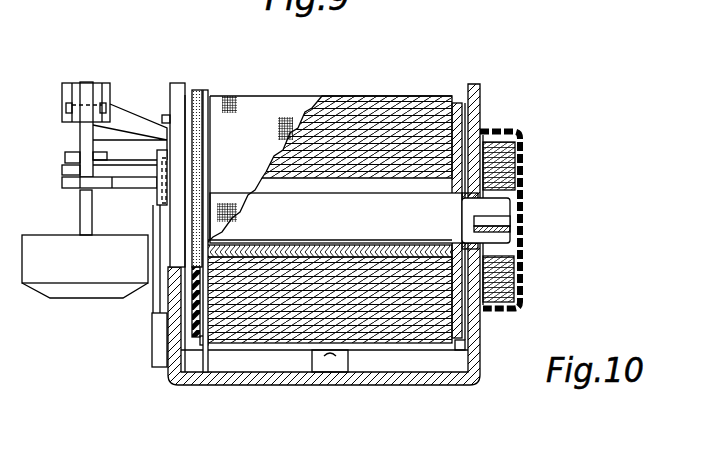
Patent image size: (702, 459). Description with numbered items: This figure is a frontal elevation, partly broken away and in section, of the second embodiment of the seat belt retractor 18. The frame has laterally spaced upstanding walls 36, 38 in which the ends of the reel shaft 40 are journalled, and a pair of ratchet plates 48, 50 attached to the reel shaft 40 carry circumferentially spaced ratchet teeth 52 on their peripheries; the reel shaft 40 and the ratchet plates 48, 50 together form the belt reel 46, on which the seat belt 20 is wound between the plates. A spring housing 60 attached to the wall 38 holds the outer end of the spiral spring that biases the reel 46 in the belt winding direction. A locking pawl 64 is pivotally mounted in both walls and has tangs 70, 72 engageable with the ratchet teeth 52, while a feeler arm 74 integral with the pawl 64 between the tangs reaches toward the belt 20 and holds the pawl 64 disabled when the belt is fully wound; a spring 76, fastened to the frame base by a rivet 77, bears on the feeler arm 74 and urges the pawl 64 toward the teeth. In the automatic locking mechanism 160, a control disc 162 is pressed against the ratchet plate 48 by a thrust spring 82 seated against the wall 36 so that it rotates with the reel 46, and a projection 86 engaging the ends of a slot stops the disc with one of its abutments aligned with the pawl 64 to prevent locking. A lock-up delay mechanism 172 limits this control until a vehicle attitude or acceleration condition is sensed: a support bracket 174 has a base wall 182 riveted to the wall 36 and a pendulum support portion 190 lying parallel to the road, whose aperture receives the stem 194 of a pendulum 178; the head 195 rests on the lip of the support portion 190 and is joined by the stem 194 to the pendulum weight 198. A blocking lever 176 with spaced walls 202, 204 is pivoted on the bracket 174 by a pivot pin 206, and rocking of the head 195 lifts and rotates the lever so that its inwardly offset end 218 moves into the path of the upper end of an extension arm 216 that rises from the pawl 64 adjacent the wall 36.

The seat belt retractor 18 is at (490, 92).
The seat belt 20 is at (374, 104).
The upstanding wall 36 is at (184, 82).
The upstanding wall 38 is at (478, 84).
The reel shaft 40 is at (376, 202).
The belt reel 46 is at (325, 92).
The ratchet plate 48 is at (222, 113).
The ratchet plate 50 is at (462, 96).
The ratchet teeth 52 is at (460, 347).
The spring housing 60 is at (505, 130).
The locking pawl 64 is at (237, 350).
The tang 70 is at (187, 338).
The tang 72 is at (463, 334).
The feeler arm 74 is at (300, 290).
The spring 76 is at (315, 360).
The rivet 77 is at (345, 360).
The thrust spring 82 is at (188, 190).
The projection 86 is at (166, 114).
The automatic locking mechanism 160 is at (201, 85).
The control disc 162 is at (205, 92).
The lock-up delay mechanism 172 is at (91, 72).
The support bracket 174 is at (90, 136).
The blocking lever 176 is at (128, 118).
The pendulum 178 is at (87, 276).
The base wall 182 is at (160, 186).
The pendulum support portion 190 is at (67, 182).
The stem 194 is at (92, 222).
The head 195 is at (66, 158).
The pendulum weight 198 is at (65, 276).
The wall 202 is at (76, 90).
The wall 204 is at (97, 86).
The pivot pin 206 is at (68, 110).
The extension arm 216 is at (160, 300).
The inwardly offset end 218 is at (150, 147).